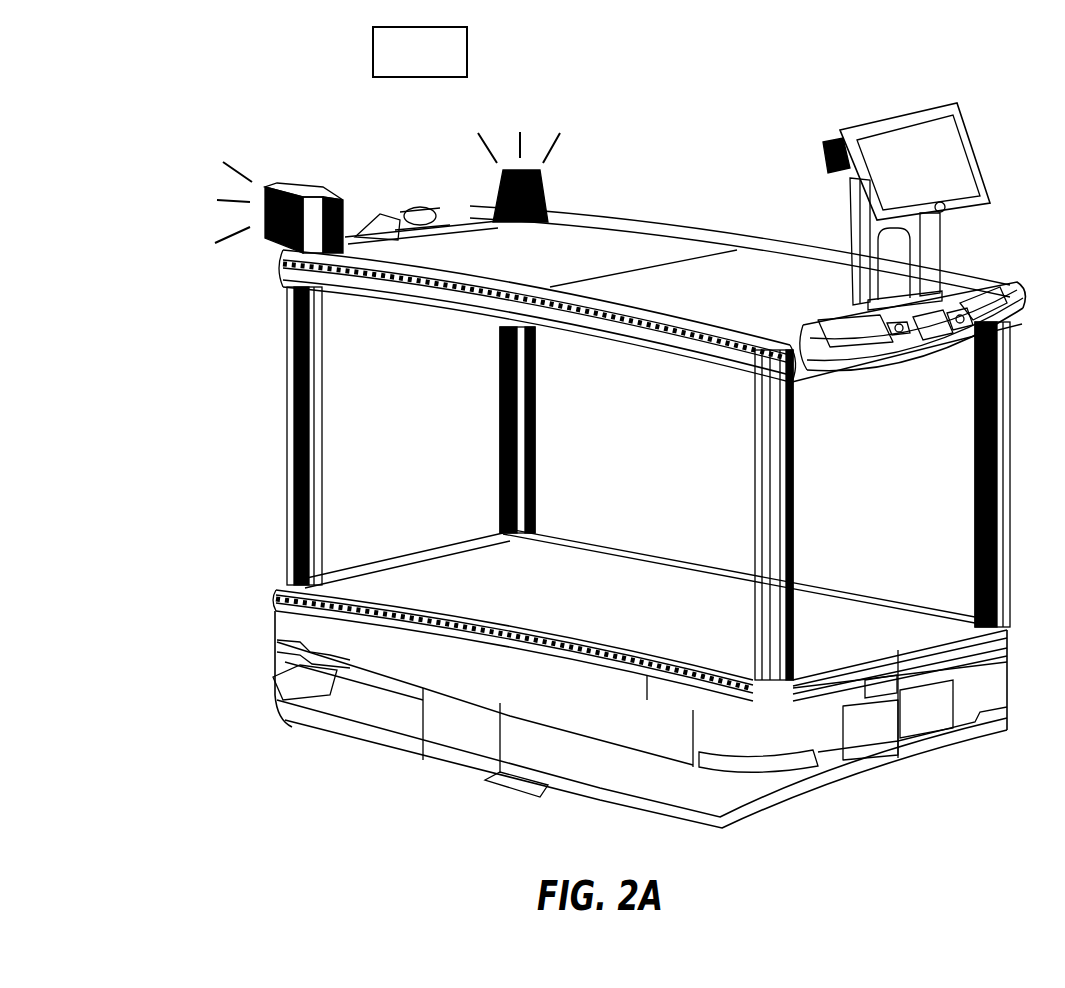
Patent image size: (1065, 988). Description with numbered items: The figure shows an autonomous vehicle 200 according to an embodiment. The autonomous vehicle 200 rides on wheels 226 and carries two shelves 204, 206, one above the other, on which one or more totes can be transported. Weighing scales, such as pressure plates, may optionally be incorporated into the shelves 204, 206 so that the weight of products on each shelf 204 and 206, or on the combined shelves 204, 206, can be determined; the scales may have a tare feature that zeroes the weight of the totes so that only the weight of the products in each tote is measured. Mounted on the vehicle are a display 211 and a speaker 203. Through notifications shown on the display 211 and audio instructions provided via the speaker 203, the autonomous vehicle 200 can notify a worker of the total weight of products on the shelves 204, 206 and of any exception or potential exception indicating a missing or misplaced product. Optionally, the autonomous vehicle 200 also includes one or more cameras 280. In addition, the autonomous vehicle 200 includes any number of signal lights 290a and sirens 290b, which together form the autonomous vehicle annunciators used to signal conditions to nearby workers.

The autonomous vehicle 200 is at (206, 92).
The shelf 204 is at (622, 240).
The shelf 206 is at (817, 600).
The display 211 is at (967, 148).
The speaker 203 is at (947, 207).
The camera 280 is at (824, 145).
The signal light 290a is at (543, 192).
The siren 290b is at (312, 187).
The wheels 226 is at (493, 778).